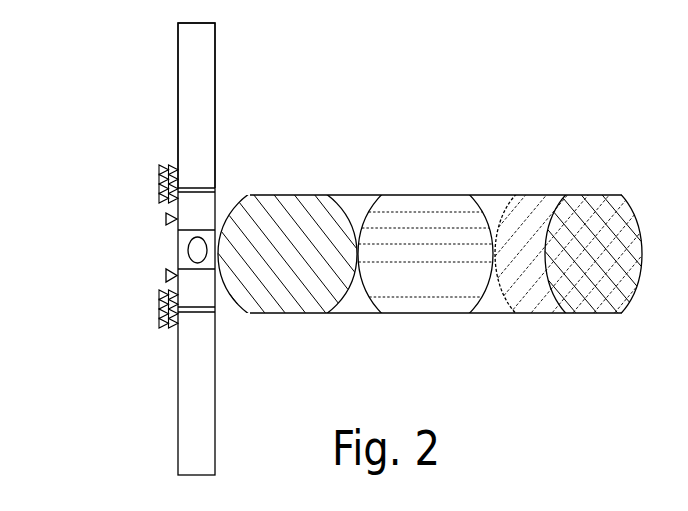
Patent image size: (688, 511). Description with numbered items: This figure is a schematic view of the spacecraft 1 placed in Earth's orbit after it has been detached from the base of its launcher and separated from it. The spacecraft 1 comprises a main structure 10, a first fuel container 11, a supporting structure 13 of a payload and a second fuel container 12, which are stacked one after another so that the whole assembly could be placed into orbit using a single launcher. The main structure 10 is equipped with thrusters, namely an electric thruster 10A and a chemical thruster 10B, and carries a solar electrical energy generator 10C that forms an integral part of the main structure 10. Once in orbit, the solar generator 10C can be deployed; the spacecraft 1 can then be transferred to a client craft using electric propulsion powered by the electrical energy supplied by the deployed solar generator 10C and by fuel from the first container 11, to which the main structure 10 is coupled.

The spacecraft 1 is at (93, 65).
The main structure 10 is at (147, 381).
The electric thruster 10A is at (148, 183).
The chemical thruster 10B is at (148, 219).
The solar electrical energy generator 10C is at (215, 53).
The first fuel container 11 is at (290, 194).
The second fuel container 12 is at (598, 194).
The supporting structure of a payload 13 is at (423, 194).